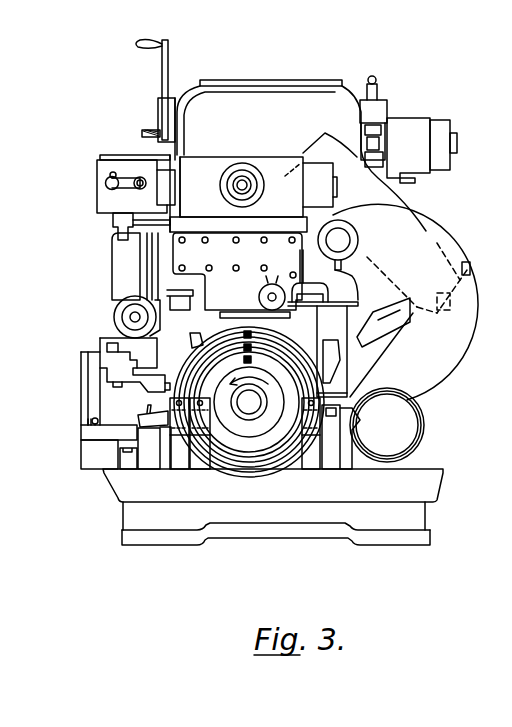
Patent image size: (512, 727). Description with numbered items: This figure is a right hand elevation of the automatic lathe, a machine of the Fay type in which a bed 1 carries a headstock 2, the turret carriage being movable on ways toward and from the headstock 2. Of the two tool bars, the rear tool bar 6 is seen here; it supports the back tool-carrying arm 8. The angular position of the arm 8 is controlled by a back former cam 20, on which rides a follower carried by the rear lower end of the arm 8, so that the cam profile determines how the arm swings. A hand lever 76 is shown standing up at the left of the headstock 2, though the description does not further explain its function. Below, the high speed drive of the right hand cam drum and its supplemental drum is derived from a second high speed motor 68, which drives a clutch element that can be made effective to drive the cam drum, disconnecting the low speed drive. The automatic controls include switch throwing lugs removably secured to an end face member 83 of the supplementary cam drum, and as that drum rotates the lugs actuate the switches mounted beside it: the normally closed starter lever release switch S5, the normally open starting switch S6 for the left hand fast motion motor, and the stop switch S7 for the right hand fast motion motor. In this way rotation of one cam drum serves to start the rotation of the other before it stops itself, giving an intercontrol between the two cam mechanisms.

The bed 1 is at (118, 499).
The headstock 2 is at (305, 97).
The rear tool bar 6 is at (342, 242).
The back tool-carrying arm 8 is at (397, 202).
The back former cam 20 is at (388, 328).
The second high speed motor 68 is at (410, 422).
The hand lever 76 is at (162, 71).
The end face member 83 is at (295, 347).
The normally closed starter lever release switch S5 is at (179, 433).
The normally open starting switch S6 is at (200, 433).
The stop switch S7 is at (311, 433).